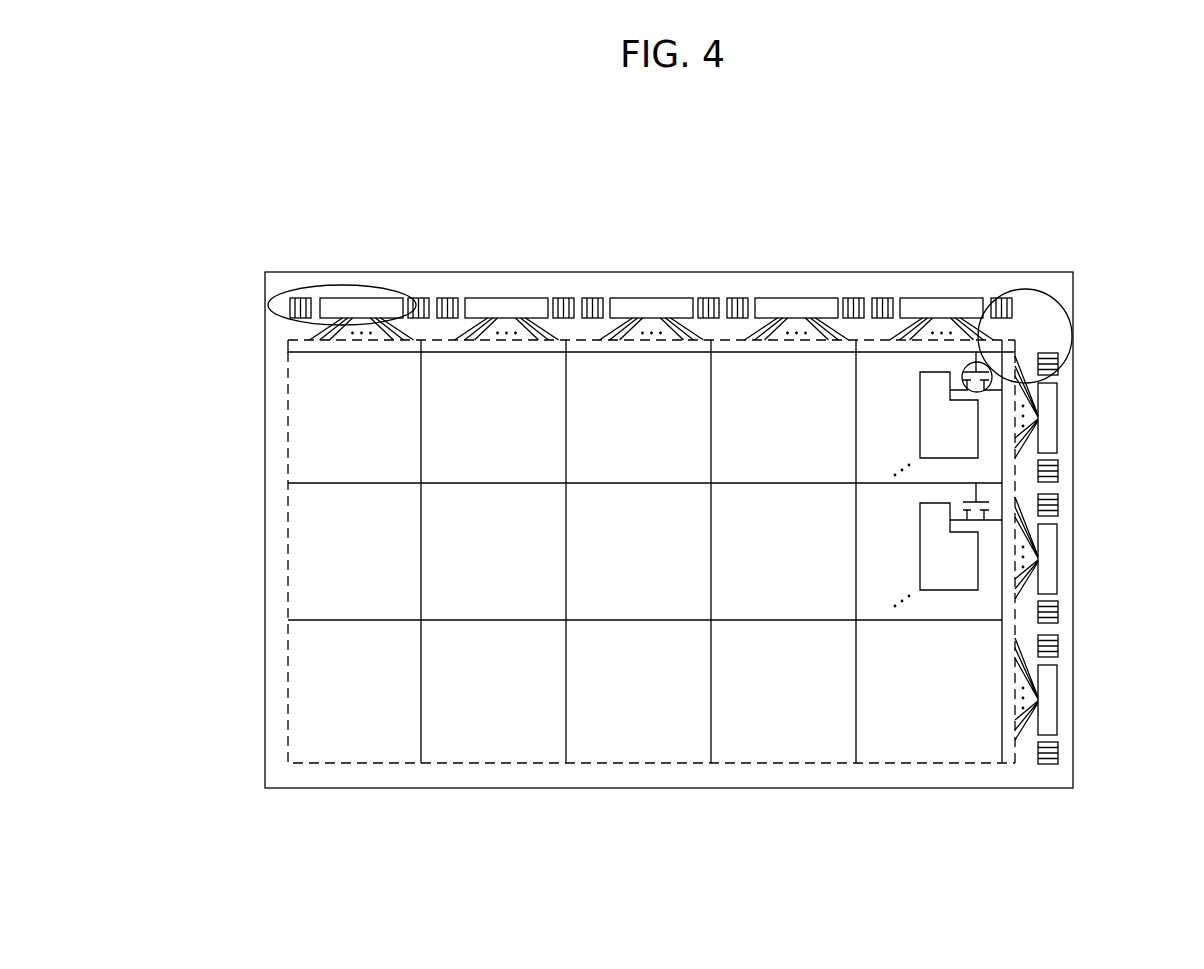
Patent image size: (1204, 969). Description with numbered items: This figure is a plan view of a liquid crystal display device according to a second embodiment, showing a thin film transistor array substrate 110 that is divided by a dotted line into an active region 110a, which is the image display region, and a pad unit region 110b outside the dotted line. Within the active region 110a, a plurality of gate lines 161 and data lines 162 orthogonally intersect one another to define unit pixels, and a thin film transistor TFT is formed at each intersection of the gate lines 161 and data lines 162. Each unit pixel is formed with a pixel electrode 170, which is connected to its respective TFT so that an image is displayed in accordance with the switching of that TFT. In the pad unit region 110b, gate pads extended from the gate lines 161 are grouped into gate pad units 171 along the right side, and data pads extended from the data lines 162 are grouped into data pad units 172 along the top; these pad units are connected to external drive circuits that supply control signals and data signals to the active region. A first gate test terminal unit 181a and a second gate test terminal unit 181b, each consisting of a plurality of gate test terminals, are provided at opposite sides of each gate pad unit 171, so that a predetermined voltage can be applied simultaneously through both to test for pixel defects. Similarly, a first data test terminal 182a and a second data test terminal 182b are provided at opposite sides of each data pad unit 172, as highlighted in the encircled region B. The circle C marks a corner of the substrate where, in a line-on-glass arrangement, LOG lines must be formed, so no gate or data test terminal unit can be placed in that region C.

The thin film transistor array substrate 110 is at (1010, 850).
The active region 110a is at (920, 750).
The pad unit region 110b is at (980, 778).
The gate line 161 is at (310, 620).
The data line 162 is at (853, 738).
The pixel electrode 170 is at (932, 437).
The gate pad unit 171 is at (1050, 552).
The data pad unit 172 is at (360, 308).
The first gate test terminal unit 181a is at (1055, 612).
The second gate test terminal unit 181b is at (1055, 502).
The first data test terminal 182a is at (305, 297).
The second data test terminal 182b is at (422, 297).
The thin film transistor TFT is at (962, 380).
The region B is at (342, 285).
The region C is at (1068, 304).